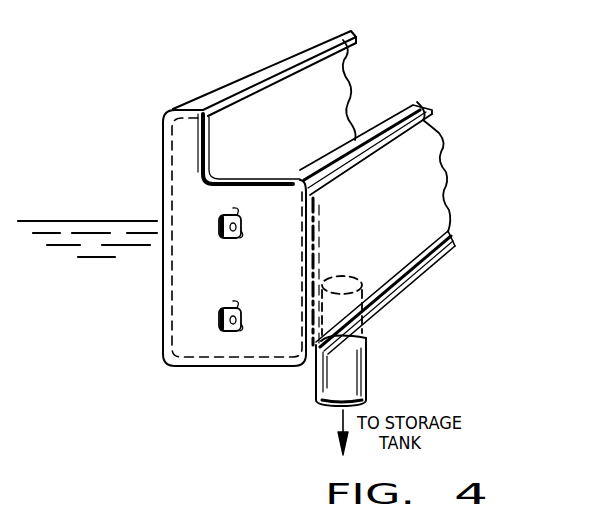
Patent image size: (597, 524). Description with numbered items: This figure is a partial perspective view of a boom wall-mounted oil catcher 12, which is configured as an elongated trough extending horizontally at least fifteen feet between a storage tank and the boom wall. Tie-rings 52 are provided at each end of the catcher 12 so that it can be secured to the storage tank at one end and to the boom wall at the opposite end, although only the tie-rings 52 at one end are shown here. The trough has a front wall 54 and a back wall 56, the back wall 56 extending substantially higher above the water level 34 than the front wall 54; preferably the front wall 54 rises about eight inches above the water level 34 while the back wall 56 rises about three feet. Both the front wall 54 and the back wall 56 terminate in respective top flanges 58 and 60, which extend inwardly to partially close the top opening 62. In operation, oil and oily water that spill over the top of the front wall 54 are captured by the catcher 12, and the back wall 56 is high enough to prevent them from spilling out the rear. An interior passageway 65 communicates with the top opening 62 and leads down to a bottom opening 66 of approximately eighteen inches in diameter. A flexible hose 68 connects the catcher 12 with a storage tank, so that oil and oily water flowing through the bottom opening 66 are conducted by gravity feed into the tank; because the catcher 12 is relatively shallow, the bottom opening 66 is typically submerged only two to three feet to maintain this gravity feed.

The boom wall-mounted oil catcher 12 is at (231, 66).
The water level 34 is at (89, 221).
The tie-rings 52 is at (218, 228).
The front wall 54 is at (427, 149).
The back wall 56 is at (343, 66).
The top flange 58 is at (414, 105).
The top flange 60 is at (307, 49).
The top opening 62 is at (382, 88).
The interior passageway 65 is at (268, 202).
The bottom opening 66 is at (342, 276).
The flexible hose 68 is at (348, 366).